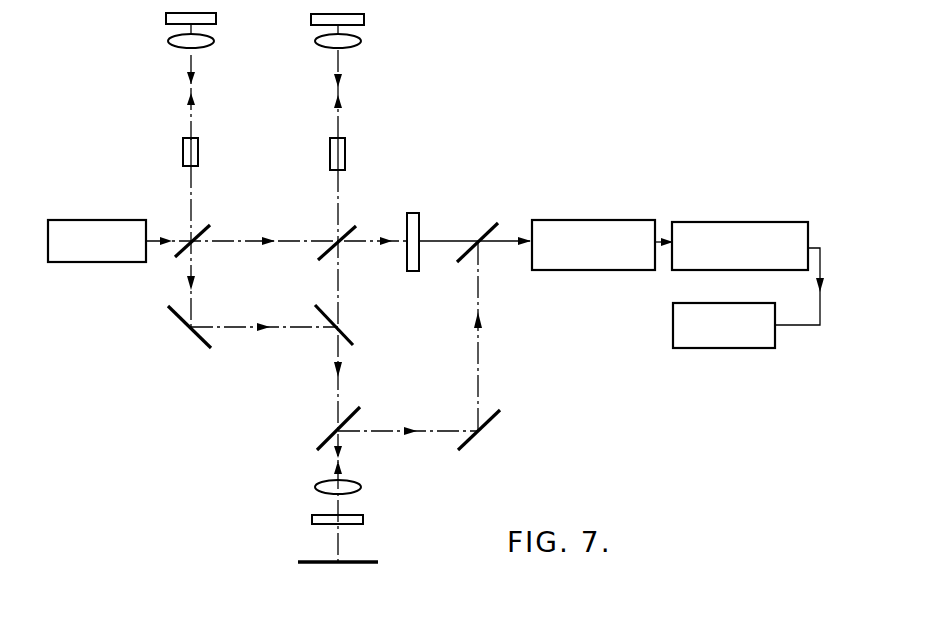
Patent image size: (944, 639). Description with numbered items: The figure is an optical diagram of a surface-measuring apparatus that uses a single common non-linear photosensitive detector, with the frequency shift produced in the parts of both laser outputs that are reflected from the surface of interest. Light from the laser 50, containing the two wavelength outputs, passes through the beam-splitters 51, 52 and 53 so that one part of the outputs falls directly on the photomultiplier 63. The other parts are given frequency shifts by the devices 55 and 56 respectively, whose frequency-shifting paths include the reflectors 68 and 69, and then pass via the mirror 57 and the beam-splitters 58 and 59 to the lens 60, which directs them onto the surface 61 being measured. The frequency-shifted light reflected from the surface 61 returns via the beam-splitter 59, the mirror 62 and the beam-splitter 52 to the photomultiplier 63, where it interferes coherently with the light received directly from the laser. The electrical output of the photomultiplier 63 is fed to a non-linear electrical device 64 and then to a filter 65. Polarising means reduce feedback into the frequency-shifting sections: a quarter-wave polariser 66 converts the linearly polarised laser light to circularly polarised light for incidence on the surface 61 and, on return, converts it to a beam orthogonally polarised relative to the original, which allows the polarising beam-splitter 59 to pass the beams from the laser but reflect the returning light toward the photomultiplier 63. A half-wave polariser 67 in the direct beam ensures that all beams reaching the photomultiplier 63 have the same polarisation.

The laser 50 is at (83, 220).
The beam-splitter 51 is at (208, 224).
The beam-splitter 52 is at (357, 224).
The beam-splitter 53 is at (494, 224).
The frequency-shifting device 55 is at (183, 140).
The frequency-shifting device 56 is at (330, 141).
The mirror 57 is at (201, 343).
The beam-splitter 58 is at (353, 343).
The polarising beam-splitter 59 is at (320, 442).
The lens 60 is at (355, 488).
The surface 61 is at (363, 561).
The mirror 62 is at (495, 421).
The photomultiplier 63 is at (582, 220).
The non-linear electrical device 64 is at (690, 221).
The filter 65 is at (716, 349).
The λ/4 polariser 66 is at (364, 518).
The λ/2 polariser 67 is at (420, 220).
The reflector 68 is at (196, 30).
The reflector 69 is at (347, 30).